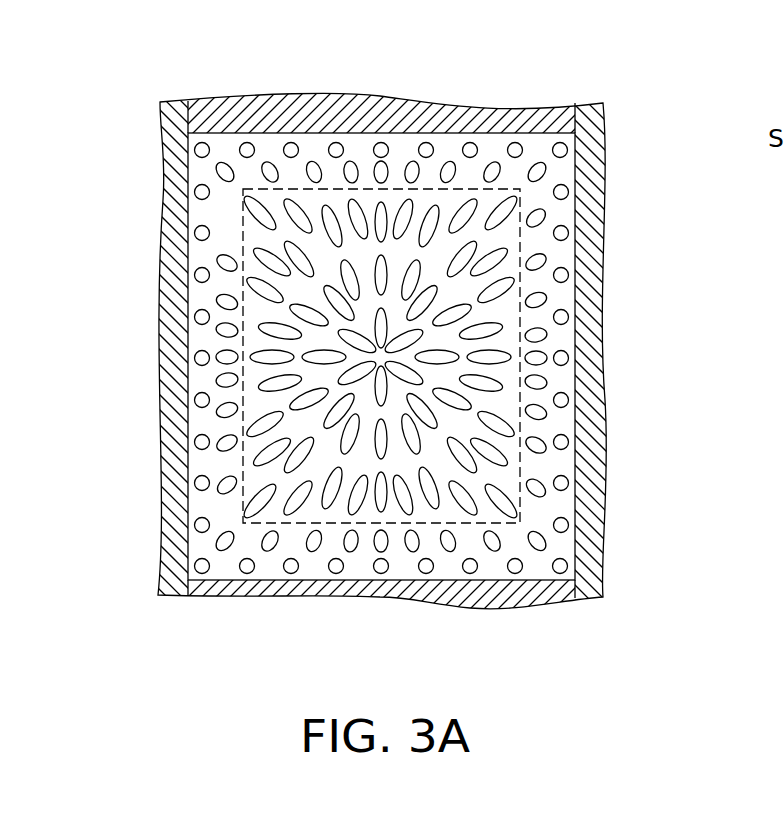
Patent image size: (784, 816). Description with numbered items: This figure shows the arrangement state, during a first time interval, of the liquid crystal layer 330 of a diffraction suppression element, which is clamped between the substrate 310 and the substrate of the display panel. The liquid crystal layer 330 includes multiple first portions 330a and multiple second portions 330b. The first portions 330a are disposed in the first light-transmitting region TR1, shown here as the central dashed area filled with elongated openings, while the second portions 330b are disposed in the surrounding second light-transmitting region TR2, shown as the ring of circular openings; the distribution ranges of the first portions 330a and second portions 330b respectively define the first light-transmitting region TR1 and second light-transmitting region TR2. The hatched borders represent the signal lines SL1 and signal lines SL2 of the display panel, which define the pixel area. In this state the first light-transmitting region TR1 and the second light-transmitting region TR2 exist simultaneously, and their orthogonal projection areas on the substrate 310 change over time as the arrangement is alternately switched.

The signal lines SL1 is at (229, 99).
The signal lines SL2 is at (166, 117).
The first light-transmitting region TR1 is at (432, 200).
The second light-transmitting region TR2 is at (477, 298).
The substrate 310 is at (535, 140).
The liquid crystal layer 330 is at (477, 358).
The first portions 330a is at (493, 327).
The second portions 330b is at (569, 277).